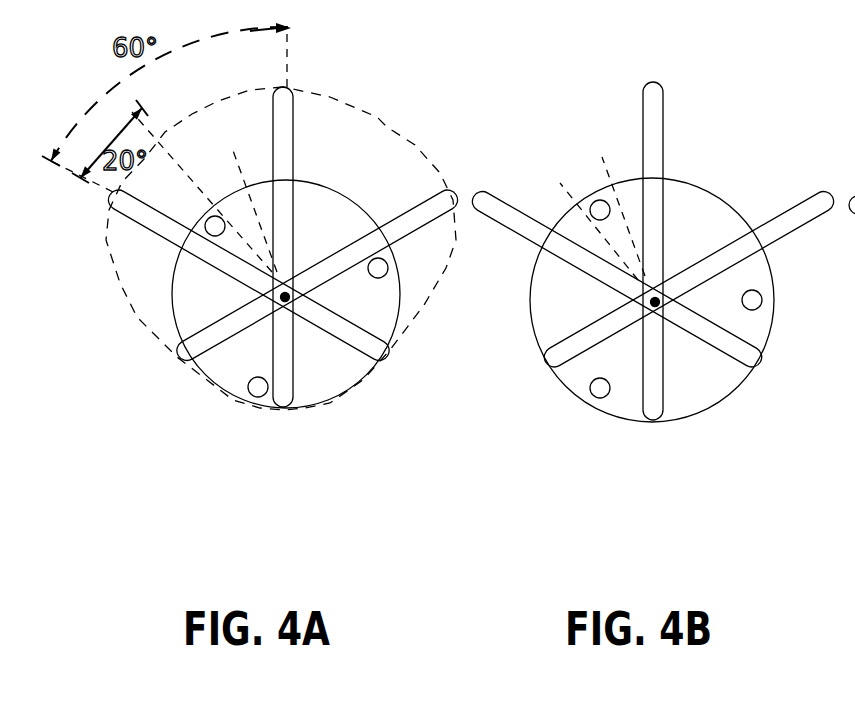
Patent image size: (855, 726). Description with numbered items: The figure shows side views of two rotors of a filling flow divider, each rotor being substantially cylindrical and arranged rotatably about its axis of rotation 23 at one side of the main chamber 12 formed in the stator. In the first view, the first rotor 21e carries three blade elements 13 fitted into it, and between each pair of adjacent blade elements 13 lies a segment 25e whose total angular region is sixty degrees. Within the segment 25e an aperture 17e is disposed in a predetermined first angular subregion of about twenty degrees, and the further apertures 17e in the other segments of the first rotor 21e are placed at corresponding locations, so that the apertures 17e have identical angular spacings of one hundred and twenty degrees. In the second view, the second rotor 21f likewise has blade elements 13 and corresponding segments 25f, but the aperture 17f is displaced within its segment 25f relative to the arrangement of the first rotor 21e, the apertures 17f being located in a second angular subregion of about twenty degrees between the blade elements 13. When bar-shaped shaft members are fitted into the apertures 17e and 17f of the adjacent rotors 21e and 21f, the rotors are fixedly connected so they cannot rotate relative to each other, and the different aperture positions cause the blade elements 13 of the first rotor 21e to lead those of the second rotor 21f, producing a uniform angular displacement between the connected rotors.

In FIG. 4A, the main chamber 12 is at (377, 117).
In FIG. 4A, the blade elements 13 is at (290, 86).
In FIG. 4B, the blade elements 13 is at (653, 88).
In FIG. 4A, the aperture 17e is at (214, 226).
In FIG. 4B, the aperture 17f is at (600, 204).
In FIG. 4A, the first rotor 21e is at (346, 206).
In FIG. 4B, the second rotor 21f is at (717, 204).
In FIG. 4A, the axis of rotation 23 is at (286, 299).
In FIG. 4B, the axis of rotation 23 is at (655, 303).
In FIG. 4A, the segment 25e is at (258, 197).
In FIG. 4B, the segment 25f is at (630, 187).